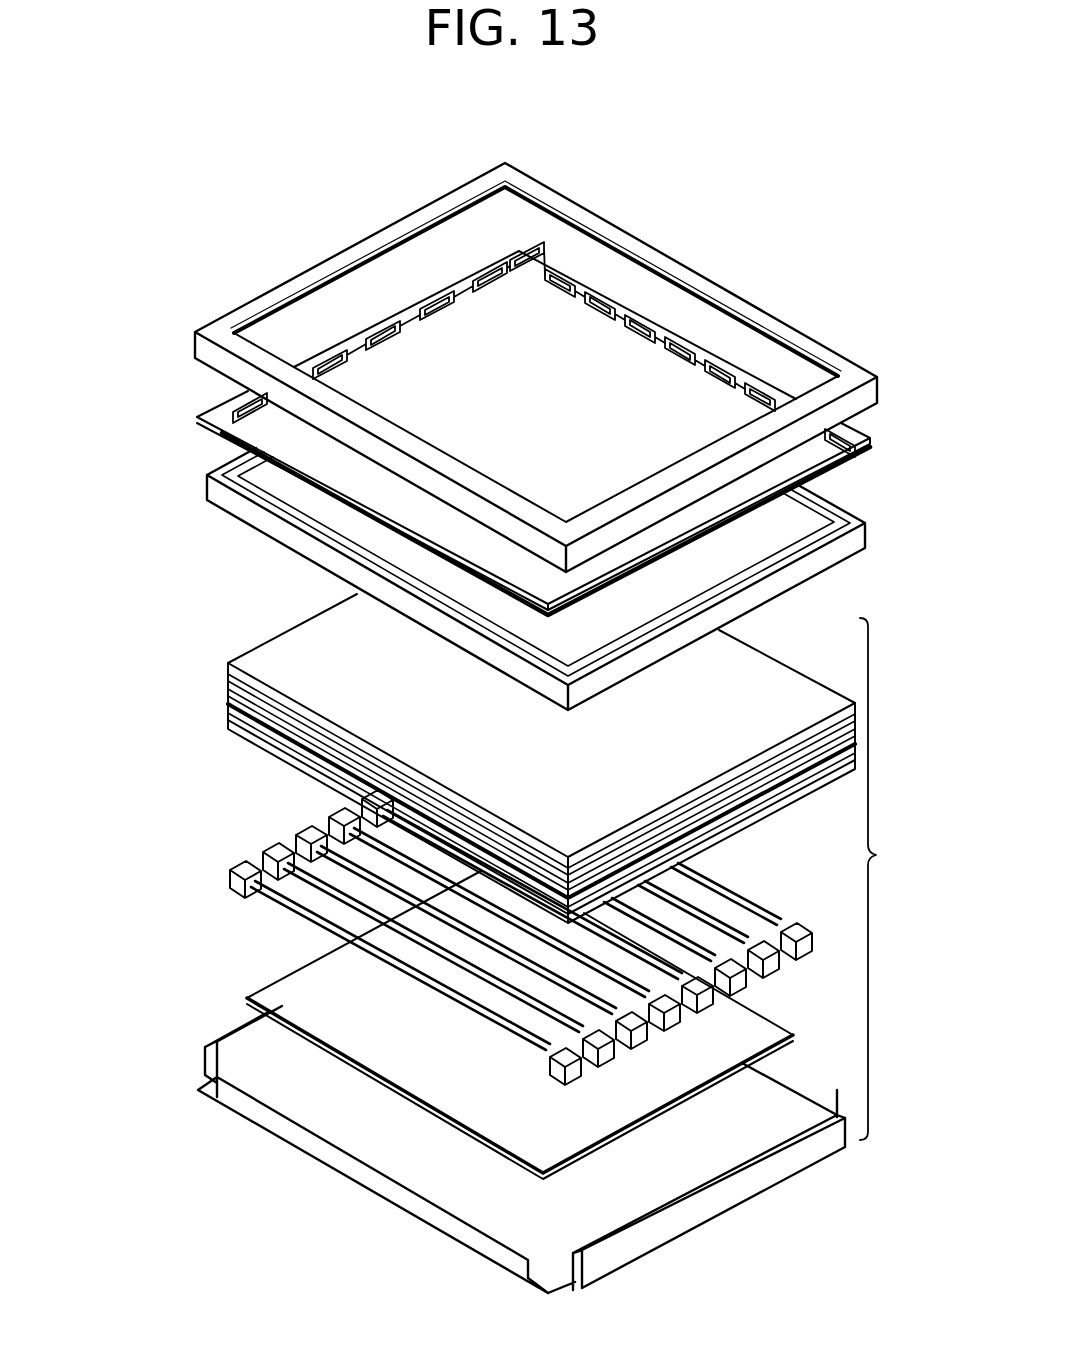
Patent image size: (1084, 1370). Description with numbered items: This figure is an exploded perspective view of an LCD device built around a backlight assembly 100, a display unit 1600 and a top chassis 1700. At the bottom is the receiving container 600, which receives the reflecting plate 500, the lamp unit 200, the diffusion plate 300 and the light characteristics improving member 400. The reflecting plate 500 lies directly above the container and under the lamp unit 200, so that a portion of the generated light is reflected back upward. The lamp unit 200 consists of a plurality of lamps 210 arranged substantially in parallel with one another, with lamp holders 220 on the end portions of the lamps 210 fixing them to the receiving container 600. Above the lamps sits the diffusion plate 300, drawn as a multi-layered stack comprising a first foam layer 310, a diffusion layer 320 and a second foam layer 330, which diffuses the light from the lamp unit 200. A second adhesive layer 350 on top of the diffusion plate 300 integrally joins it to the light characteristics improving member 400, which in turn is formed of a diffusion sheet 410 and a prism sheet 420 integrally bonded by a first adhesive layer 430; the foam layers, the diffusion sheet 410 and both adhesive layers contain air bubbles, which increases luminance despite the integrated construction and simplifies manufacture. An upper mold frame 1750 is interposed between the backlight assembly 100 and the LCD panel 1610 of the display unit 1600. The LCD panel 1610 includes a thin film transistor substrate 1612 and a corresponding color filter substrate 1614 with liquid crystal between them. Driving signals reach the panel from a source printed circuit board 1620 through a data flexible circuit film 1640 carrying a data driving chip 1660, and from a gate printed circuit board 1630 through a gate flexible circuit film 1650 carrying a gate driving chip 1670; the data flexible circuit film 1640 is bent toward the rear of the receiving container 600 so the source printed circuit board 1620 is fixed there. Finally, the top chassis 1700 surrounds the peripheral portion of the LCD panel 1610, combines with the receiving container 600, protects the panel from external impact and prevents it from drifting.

The backlight assembly 100 is at (891, 879).
The lamp unit 200 is at (451, 937).
The lamp 210 is at (280, 895).
The lamp holder 220 is at (230, 878).
The diffusion plate 300 is at (477, 740).
The first foam layer 310 is at (228, 733).
The diffusion layer 320 is at (228, 715).
The second foam layer 330 is at (228, 697).
The second adhesive layer 350 is at (228, 688).
The light characteristics improving member 400 is at (477, 716).
The diffusion sheet 410 is at (228, 680).
The prism sheet 420 is at (228, 667).
The first adhesive layer 430 is at (228, 673).
The reflecting plate 500 is at (267, 993).
The receiving container 600 is at (273, 1125).
The display unit 1600 is at (459, 380).
The LCD panel 1610 is at (459, 380).
The thin film transistor substrate 1612 is at (243, 430).
The color filter substrate 1614 is at (255, 452).
The source printed circuit board 1620 is at (653, 325).
The gate printed circuit board 1630 is at (353, 272).
The data flexible circuit film 1640 is at (697, 340).
The gate flexible circuit film 1650 is at (400, 307).
The data driving chip 1660 is at (600, 293).
The gate driving chip 1670 is at (487, 265).
The top chassis 1700 is at (593, 225).
The upper mold frame 1750 is at (843, 517).